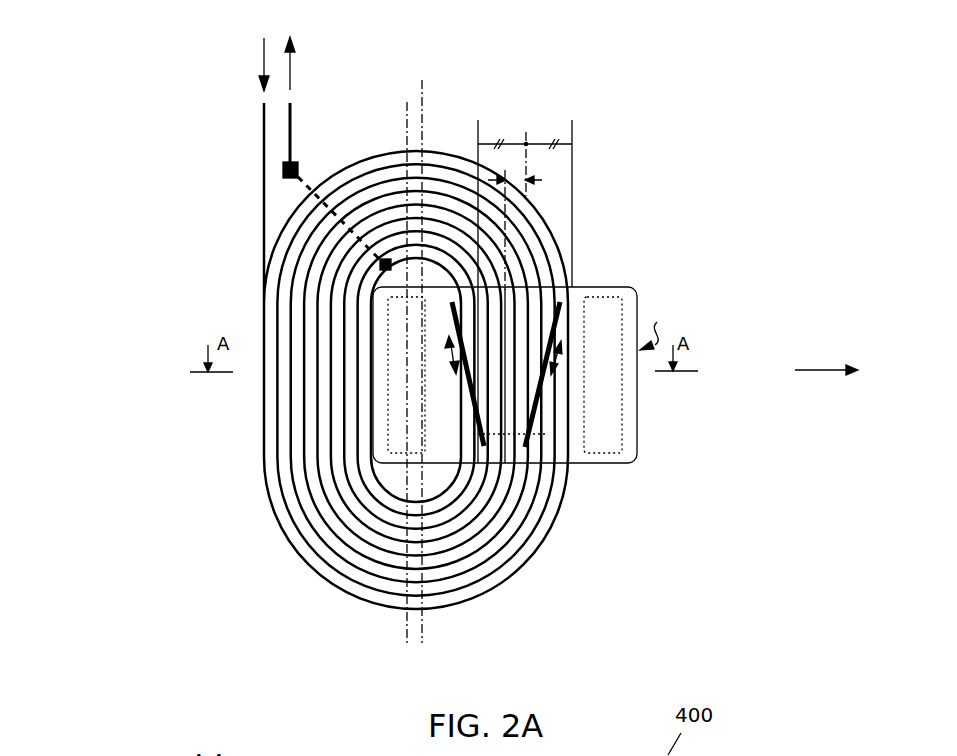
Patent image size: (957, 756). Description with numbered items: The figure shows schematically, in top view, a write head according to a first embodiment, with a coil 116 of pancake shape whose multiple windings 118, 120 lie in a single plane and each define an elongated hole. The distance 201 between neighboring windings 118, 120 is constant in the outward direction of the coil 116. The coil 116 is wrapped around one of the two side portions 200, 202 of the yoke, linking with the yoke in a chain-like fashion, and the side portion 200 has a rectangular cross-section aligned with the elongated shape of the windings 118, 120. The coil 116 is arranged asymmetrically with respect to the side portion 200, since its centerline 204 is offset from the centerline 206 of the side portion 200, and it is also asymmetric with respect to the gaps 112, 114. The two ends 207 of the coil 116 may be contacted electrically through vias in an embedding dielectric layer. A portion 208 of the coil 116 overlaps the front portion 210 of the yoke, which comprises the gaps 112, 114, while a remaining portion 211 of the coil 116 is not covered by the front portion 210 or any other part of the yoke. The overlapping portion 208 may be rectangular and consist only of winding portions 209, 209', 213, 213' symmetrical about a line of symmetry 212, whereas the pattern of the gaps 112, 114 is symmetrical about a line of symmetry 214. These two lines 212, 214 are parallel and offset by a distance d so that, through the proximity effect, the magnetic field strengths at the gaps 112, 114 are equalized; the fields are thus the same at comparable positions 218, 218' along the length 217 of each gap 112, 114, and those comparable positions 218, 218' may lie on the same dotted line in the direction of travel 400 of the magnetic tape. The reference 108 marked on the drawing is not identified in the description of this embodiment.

The electronic device 108 is at (146, 94).
The gap 112 is at (457, 369).
The gap 114 is at (531, 448).
The coil 116 is at (566, 536).
The winding 118 is at (482, 582).
The winding 120 is at (530, 554).
The side portion 200 is at (405, 380).
The distance 201 is at (373, 552).
The side portion 202 is at (607, 411).
The centerline 204 is at (420, 116).
The centerline 206 is at (407, 144).
The ends 207 is at (290, 136).
The portion 208 is at (537, 286).
The winding portion 209 is at (446, 305).
The winding portion 209' is at (700, 288).
The front portion 210 is at (590, 310).
The remaining portion 211 is at (268, 522).
The line of symmetry 212 is at (533, 157).
The winding portion 213 is at (465, 452).
The winding portion 213' is at (678, 411).
The line of symmetry 214 is at (504, 210).
The length 217 is at (450, 355).
The comparable position 218 is at (438, 498).
The comparable position 218' is at (628, 430).
The direction of travel 400 is at (812, 370).